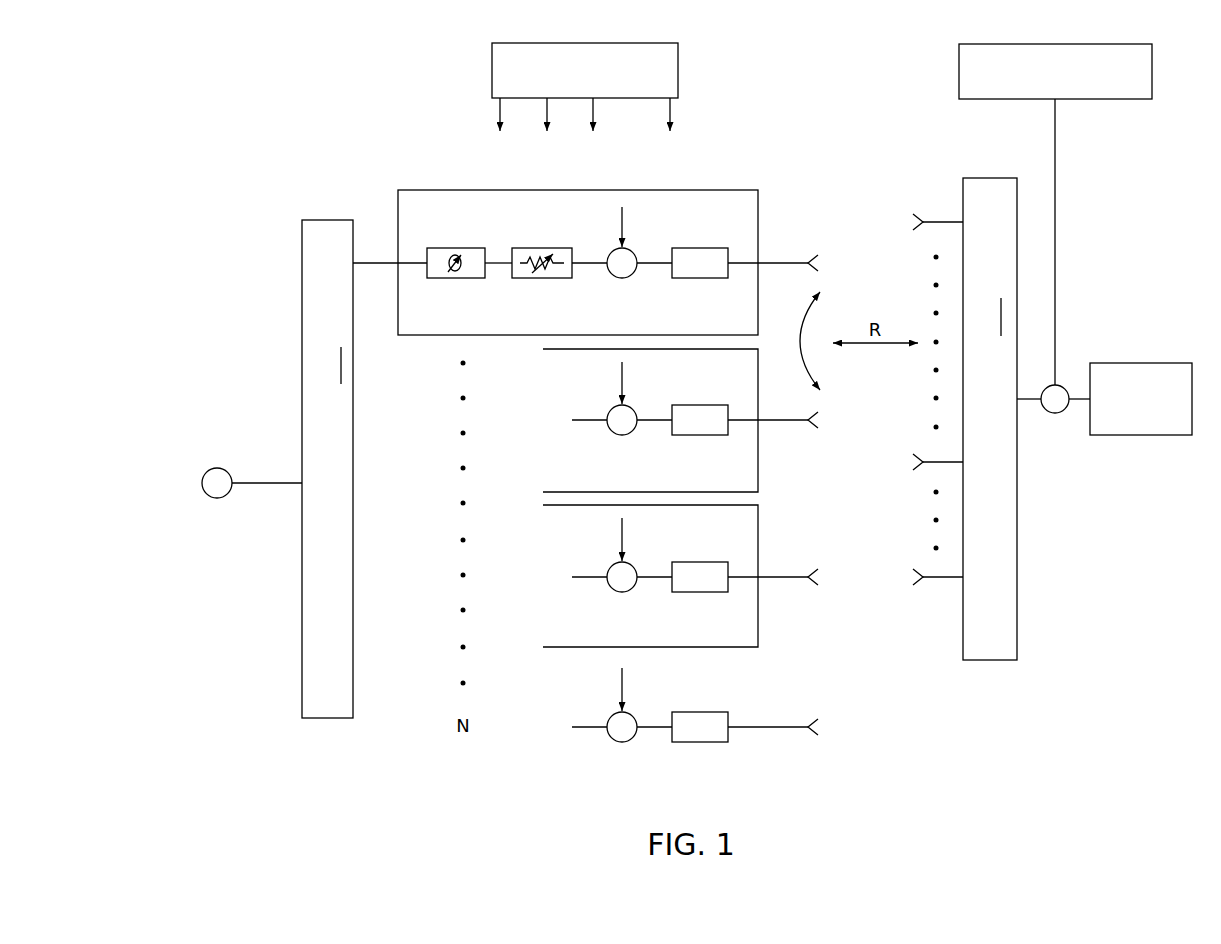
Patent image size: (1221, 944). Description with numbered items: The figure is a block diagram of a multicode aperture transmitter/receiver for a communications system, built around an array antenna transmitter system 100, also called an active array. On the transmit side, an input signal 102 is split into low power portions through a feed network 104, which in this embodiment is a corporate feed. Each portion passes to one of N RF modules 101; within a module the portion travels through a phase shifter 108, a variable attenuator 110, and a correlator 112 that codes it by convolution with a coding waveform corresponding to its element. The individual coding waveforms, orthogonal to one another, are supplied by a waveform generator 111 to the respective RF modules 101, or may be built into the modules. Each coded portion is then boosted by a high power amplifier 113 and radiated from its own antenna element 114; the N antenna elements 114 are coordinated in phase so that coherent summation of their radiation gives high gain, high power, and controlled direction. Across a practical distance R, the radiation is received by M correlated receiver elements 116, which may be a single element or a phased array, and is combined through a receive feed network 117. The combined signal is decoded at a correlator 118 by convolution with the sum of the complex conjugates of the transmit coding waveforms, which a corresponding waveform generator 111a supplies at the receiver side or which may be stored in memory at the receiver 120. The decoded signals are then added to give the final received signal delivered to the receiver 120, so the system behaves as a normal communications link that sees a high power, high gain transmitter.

The array antenna transmitter system 100 is at (228, 735).
The RF module 101 is at (433, 345).
The signal 102 is at (217, 498).
The feed network 104 is at (364, 469).
The phase shifter 108 is at (457, 278).
The variable attenuator 110 is at (545, 278).
The waveform generator 111 is at (678, 70).
The waveform generator 111a is at (959, 71).
The correlator 112 is at (622, 278).
The high power amplifier 113 is at (700, 278).
The antenna element 114 is at (796, 493).
The correlated receiver element 116 is at (934, 221).
The receive feed network 117 is at (1002, 419).
The correlator 118 is at (1055, 413).
The receiver 120 is at (1141, 363).